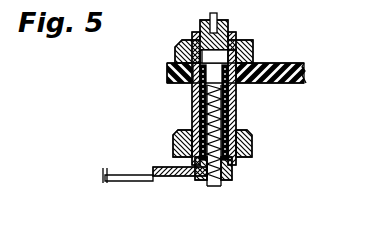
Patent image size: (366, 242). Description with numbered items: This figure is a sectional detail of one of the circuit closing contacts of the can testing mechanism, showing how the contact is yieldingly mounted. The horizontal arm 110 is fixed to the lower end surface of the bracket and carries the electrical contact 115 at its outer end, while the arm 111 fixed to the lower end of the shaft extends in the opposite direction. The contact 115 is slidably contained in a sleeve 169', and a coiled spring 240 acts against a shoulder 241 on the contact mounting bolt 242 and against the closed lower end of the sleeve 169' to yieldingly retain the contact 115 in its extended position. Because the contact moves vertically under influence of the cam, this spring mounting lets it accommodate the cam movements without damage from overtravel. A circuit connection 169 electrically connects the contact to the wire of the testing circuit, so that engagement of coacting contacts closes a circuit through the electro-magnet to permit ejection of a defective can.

The horizontal arm 110 is at (286, 85).
The arm 111 is at (216, 16).
The electrical contact 115 is at (218, 15).
The circuit connection 169 is at (141, 169).
The sleeve 169' is at (264, 98).
The coiled spring 240 is at (197, 112).
The shoulder 241 is at (191, 96).
The contact mounting bolt 242 is at (190, 131).